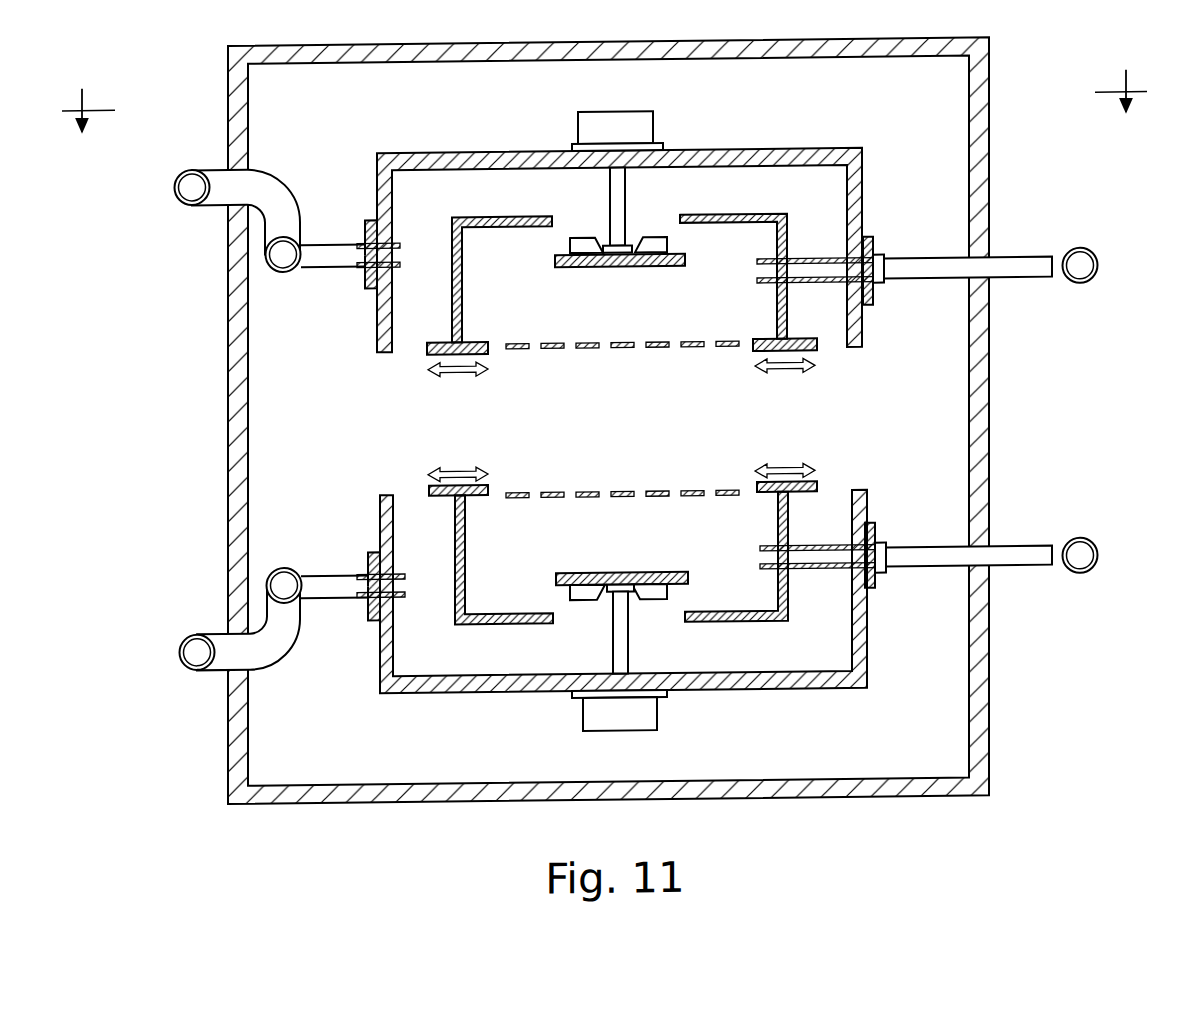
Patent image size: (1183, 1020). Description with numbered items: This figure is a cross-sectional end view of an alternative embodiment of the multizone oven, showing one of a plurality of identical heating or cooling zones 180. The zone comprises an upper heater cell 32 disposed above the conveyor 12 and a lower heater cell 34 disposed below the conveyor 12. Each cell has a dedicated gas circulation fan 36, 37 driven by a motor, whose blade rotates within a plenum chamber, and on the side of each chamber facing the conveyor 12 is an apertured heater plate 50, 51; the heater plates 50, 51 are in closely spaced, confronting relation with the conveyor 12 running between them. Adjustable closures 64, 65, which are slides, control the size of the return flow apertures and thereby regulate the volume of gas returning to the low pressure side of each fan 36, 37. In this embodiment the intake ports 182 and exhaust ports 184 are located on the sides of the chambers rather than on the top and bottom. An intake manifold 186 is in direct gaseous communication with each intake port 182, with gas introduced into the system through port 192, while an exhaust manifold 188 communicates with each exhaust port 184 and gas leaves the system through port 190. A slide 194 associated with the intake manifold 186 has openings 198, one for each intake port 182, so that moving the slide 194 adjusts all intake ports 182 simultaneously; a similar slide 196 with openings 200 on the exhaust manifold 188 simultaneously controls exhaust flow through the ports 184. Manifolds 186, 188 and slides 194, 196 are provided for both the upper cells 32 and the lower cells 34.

The conveyor 12 is at (604, 90).
The upper heater cell 32 is at (546, 188).
The lower heater cell 34 is at (513, 645).
The fan 36 is at (603, 273).
The fan 37 is at (652, 577).
The heater plate 50 is at (590, 354).
The heater plate 51 is at (624, 495).
The closure 64 is at (447, 346).
The closure 65 is at (441, 499).
The heating or cooling zone 180 is at (200, 414).
The intake port 182 is at (401, 255).
The exhaust port 184 is at (759, 277).
The intake manifold 186 is at (213, 211).
The exhaust manifold 188 is at (1015, 263).
The port 190 is at (1100, 268).
The port 192 is at (175, 180).
The slide 194 is at (363, 284).
The slide 196 is at (875, 251).
The opening 198 is at (366, 238).
The opening 200 is at (881, 293).